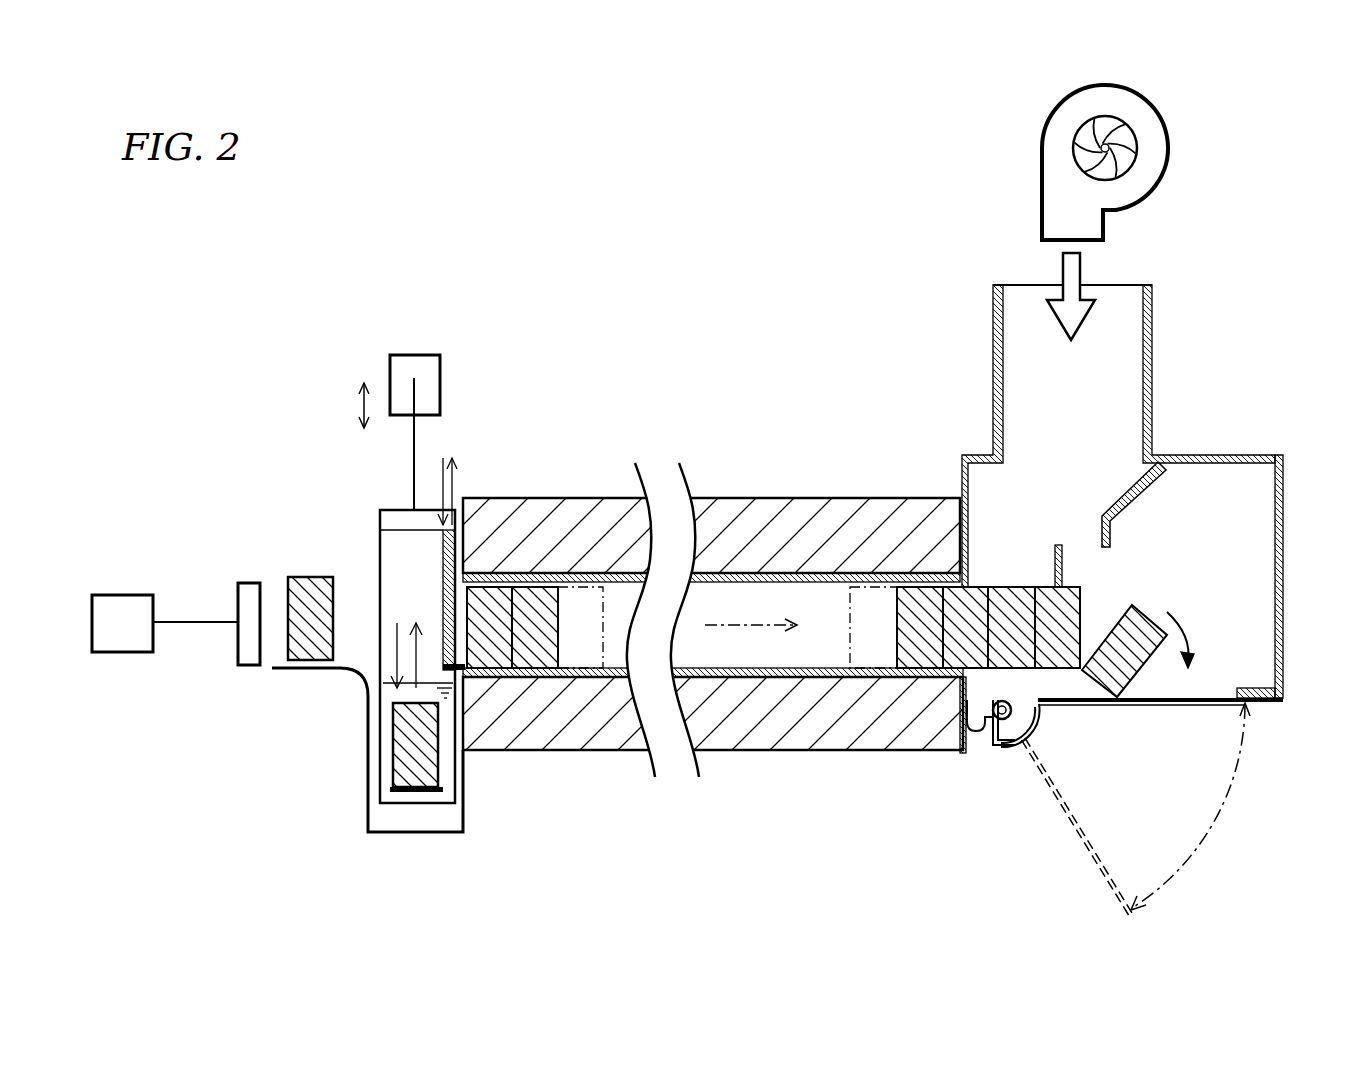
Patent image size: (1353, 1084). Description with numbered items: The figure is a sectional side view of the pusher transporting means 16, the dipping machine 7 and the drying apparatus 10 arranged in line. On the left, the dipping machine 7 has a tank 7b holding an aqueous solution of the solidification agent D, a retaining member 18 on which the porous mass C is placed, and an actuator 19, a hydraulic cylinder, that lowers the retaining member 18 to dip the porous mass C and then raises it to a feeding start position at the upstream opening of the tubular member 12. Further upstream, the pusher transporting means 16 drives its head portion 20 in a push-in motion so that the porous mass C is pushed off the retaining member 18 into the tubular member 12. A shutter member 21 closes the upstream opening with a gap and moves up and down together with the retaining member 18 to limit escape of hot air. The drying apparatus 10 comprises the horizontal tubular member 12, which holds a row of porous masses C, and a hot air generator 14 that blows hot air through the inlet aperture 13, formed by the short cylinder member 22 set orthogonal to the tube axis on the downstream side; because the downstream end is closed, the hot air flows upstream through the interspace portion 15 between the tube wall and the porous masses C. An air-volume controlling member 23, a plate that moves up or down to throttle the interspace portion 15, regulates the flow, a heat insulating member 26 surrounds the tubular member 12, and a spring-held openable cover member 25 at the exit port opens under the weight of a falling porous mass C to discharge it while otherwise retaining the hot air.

The dipping machine 7 is at (362, 818).
The tank 7b is at (378, 735).
The drying apparatus 10 is at (1198, 410).
The tubular member 12 is at (735, 568).
The inlet aperture 13 is at (1120, 284).
The hot air generator 14 is at (1168, 147).
The interspace portion 15 is at (582, 594).
The pusher transporting means 16 is at (129, 588).
The retaining member 18 is at (402, 792).
The actuator 19 is at (402, 355).
The head portion 20 is at (252, 582).
The shutter member 21 is at (440, 567).
The short cylinder member 22 is at (1153, 350).
The air-volume controlling member 23 is at (1058, 554).
The openable cover member 25 is at (1178, 708).
The heat insulating member 26 is at (852, 527).
The porous mass C is at (540, 600).
The solidification agent D is at (447, 773).